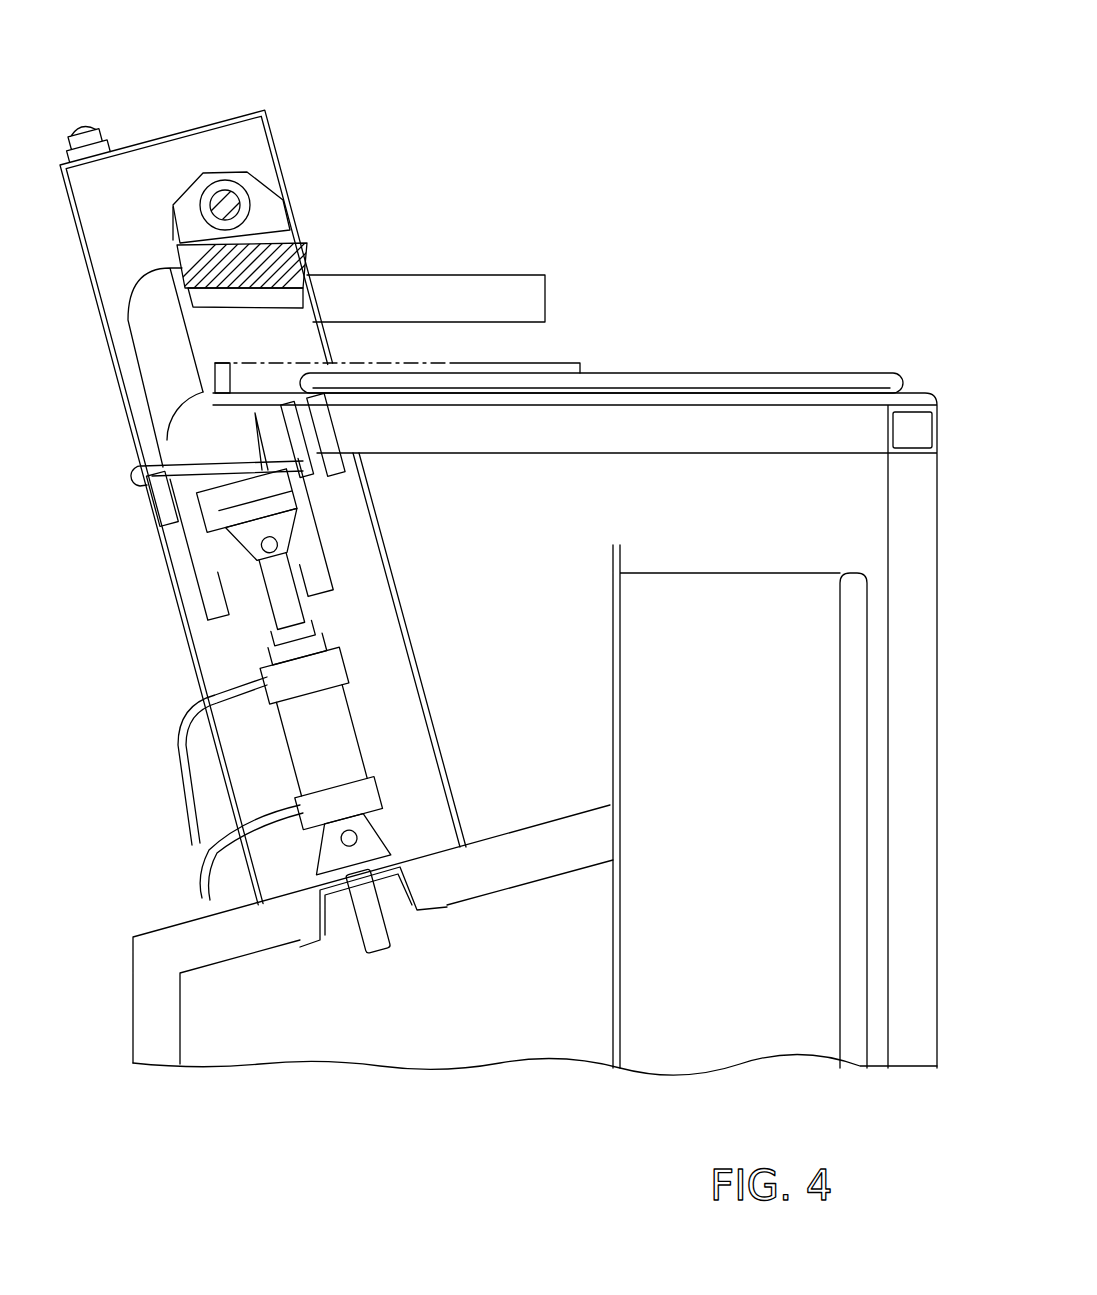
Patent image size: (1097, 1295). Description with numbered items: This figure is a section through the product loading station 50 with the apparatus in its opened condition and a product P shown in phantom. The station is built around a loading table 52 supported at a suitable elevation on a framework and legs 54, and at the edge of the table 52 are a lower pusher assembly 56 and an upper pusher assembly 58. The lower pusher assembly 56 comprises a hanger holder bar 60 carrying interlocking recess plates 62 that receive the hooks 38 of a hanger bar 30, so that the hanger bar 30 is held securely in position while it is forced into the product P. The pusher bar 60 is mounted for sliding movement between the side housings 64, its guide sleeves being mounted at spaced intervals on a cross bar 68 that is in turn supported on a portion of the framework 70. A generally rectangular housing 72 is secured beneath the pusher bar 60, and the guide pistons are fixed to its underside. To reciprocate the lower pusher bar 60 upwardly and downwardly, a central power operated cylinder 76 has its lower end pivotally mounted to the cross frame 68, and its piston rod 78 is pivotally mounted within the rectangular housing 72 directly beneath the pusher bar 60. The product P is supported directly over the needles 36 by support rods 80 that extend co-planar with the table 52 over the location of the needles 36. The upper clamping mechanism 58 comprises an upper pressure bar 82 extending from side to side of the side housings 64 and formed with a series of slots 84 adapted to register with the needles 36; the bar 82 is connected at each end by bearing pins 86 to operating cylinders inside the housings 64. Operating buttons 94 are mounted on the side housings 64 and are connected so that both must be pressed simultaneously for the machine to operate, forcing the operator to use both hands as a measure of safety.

The hanger bar 30 is at (180, 440).
The needles 36 is at (350, 452).
The hooks 38 is at (130, 480).
The product loading station 50 is at (505, 212).
The loading table 52 is at (747, 373).
The legs 54 is at (900, 493).
The lower pusher assembly 56 is at (178, 670).
The upper pusher assembly 58 is at (320, 238).
The hanger holder bar 60 is at (193, 502).
The interlocking recess plates 62 is at (158, 500).
The side housing 64 is at (383, 682).
The cross bar 68 is at (337, 915).
The framework 70 is at (253, 928).
The rectangular housing 72 is at (222, 565).
The central power operated cylinder 76 is at (347, 733).
The piston rod 78 is at (307, 622).
The support rods 80 is at (185, 418).
The upper pressure bar 82 is at (270, 272).
The slots 84 is at (275, 300).
The bearing pins 86 is at (233, 190).
The operating buttons 94 is at (88, 127).
The product P is at (550, 363).